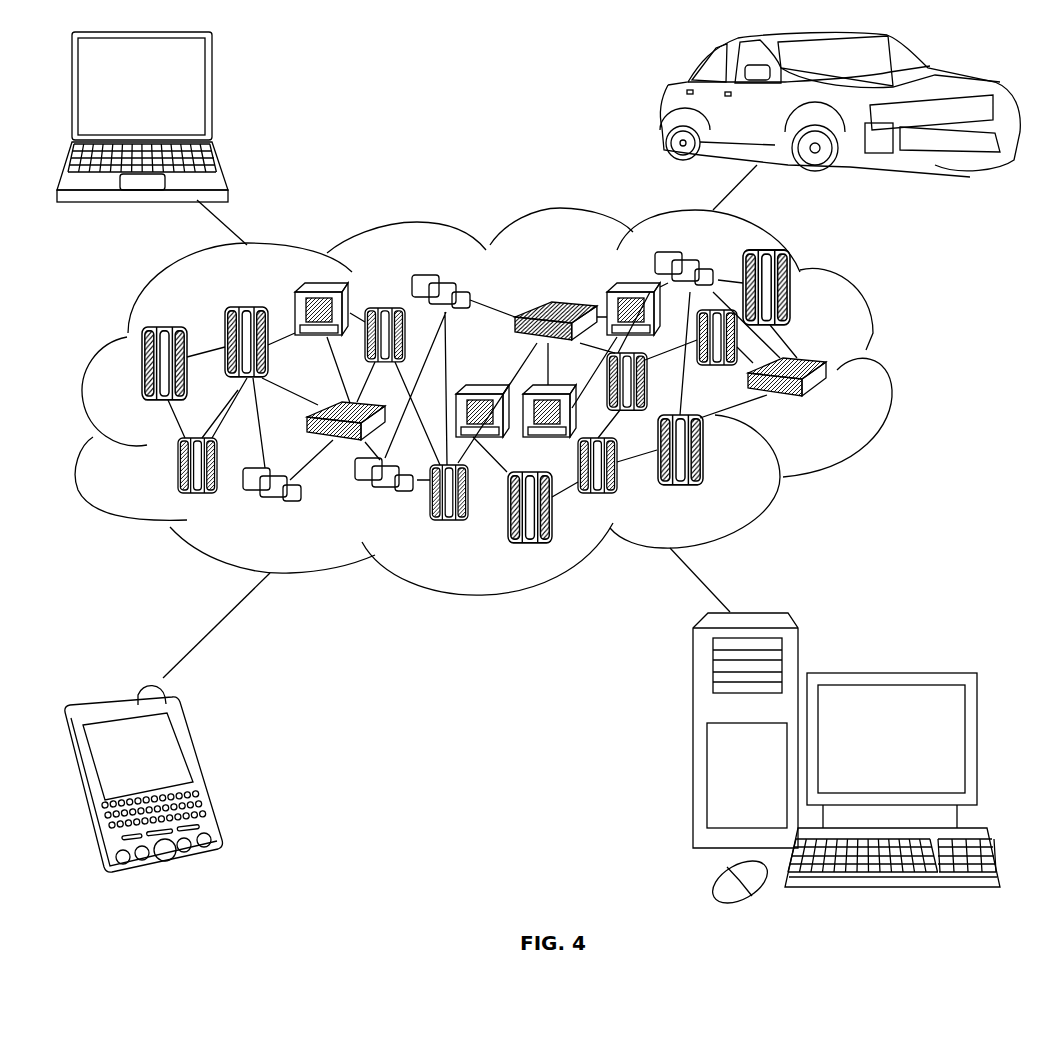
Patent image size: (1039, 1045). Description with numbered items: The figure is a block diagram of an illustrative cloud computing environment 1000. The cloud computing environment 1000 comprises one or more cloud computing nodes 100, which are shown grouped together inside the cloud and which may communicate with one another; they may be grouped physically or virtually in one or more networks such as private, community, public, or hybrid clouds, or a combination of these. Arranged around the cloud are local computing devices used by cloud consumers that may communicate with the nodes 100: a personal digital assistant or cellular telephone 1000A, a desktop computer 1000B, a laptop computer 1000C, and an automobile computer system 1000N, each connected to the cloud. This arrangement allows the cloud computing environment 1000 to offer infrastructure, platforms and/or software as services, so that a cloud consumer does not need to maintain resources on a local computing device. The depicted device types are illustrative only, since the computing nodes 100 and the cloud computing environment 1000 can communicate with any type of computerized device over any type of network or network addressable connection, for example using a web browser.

The cloud computing environment 1000 is at (892, 375).
The cloud computing nodes 100 is at (836, 409).
The personal digital assistant (PDA) or cellular telephone 1000A is at (202, 770).
The desktop computer 1000B is at (888, 670).
The laptop computer 1000C is at (215, 101).
The automobile computer system 1000N is at (667, 112).